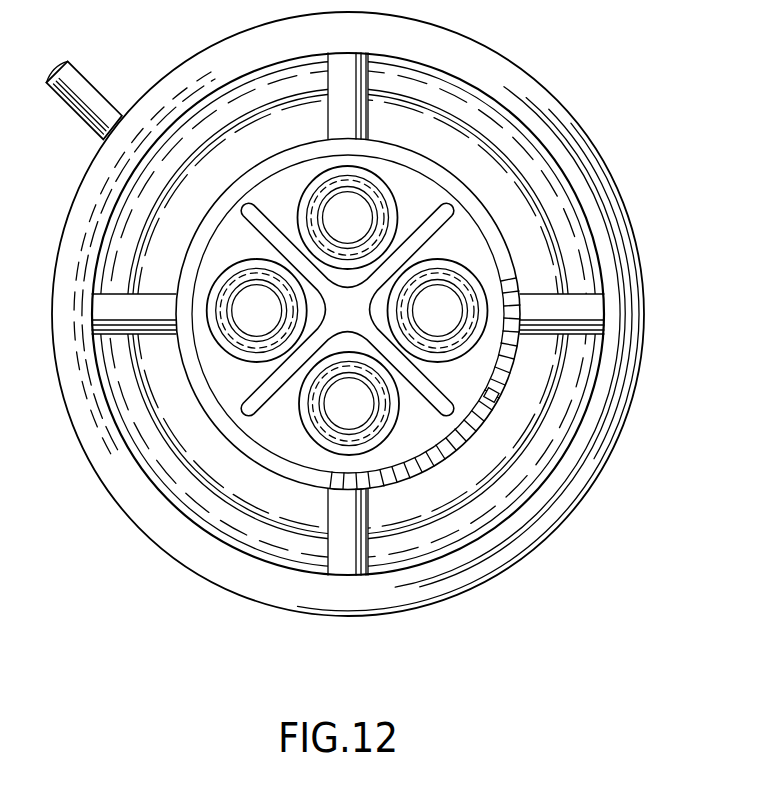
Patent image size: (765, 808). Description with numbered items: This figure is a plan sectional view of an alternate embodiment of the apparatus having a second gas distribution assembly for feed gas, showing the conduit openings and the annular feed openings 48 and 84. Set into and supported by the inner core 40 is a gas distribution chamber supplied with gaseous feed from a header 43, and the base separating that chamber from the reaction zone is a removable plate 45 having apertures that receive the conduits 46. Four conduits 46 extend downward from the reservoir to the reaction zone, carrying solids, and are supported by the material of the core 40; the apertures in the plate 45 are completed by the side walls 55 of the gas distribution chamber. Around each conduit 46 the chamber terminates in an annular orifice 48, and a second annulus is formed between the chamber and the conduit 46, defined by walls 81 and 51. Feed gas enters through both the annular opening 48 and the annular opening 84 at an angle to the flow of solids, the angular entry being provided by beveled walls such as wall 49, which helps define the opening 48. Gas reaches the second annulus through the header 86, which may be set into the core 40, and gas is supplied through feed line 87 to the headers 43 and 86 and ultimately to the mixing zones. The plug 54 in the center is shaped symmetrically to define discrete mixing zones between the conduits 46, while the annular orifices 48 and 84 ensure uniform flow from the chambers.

The inner core 40 is at (606, 88).
The header 43 is at (628, 268).
The removable plate 45 is at (303, 188).
The conduits 46 is at (334, 234).
The annular orifice 48 is at (383, 437).
The beveled wall 49 is at (371, 181).
The wall 51 is at (323, 402).
The plug 54 is at (336, 325).
The side walls 55 is at (492, 394).
The wall 81 is at (391, 402).
The annular opening 84 is at (318, 422).
The header 86 is at (562, 228).
The feed line 87 is at (93, 95).